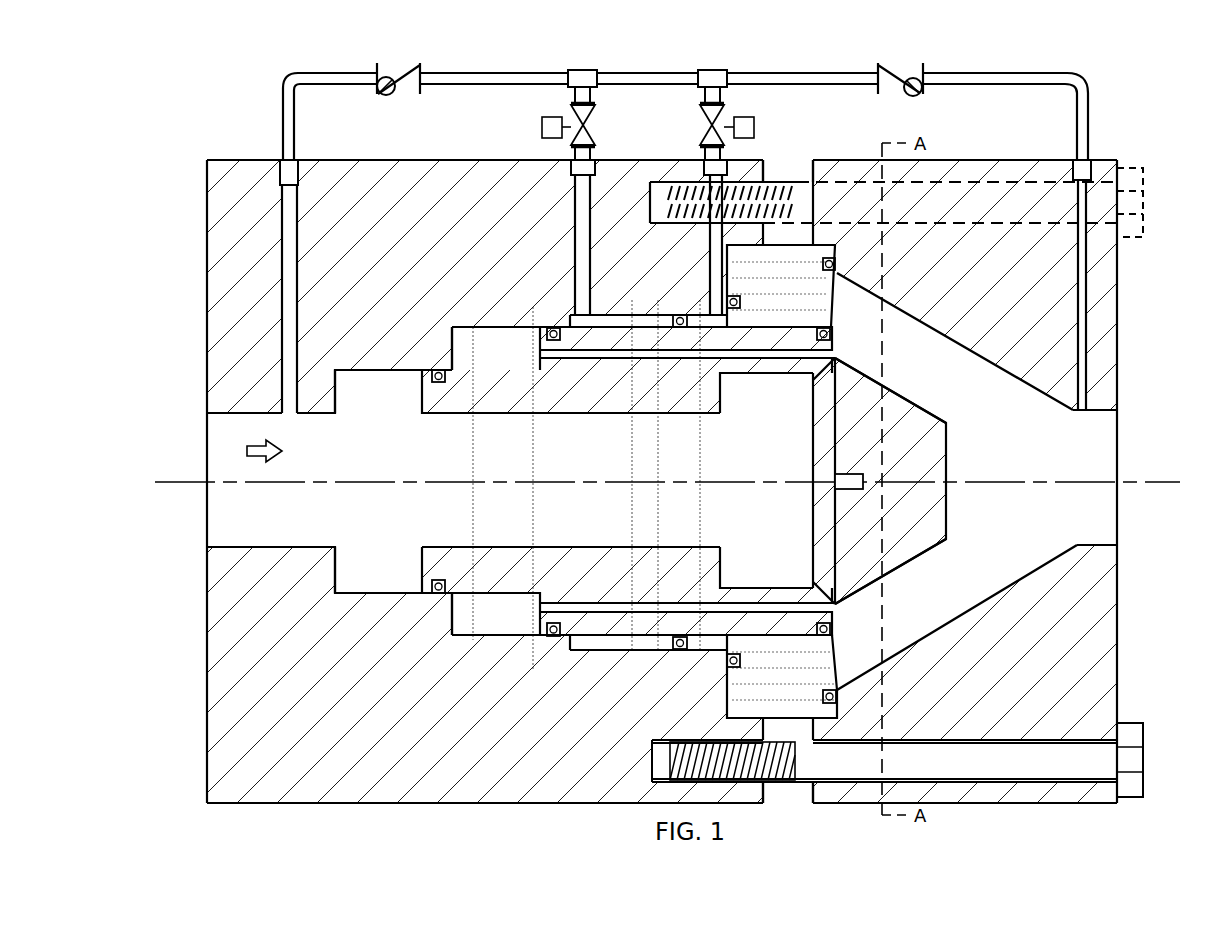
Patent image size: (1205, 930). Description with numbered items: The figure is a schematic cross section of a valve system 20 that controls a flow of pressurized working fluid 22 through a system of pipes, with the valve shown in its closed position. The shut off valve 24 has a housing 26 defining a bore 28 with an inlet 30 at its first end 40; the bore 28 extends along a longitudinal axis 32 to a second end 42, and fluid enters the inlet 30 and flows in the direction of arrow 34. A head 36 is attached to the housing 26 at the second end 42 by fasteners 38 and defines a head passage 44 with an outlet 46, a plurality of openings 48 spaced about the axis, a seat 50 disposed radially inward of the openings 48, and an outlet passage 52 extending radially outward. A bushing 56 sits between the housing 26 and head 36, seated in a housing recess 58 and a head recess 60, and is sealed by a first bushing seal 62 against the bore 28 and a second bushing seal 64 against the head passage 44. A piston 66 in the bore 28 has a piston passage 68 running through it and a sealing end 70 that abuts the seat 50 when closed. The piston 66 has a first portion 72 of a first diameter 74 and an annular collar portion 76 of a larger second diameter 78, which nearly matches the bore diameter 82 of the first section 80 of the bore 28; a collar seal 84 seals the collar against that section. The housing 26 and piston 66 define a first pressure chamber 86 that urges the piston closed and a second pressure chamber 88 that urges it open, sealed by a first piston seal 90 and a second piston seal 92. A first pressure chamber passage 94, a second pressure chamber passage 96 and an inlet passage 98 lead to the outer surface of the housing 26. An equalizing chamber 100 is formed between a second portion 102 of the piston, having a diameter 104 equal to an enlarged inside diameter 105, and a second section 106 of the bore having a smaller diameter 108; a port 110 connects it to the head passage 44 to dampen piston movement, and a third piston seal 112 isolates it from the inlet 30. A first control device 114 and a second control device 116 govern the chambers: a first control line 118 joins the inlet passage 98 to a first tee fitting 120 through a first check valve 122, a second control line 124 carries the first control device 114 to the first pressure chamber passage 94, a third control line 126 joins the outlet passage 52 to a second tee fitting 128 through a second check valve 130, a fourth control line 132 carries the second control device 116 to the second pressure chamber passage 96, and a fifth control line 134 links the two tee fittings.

The valve system 20 is at (1035, 40).
The working fluid 22 is at (281, 502).
The shut off valve 24 is at (250, 160).
The housing 26 is at (205, 240).
The bore 28 is at (240, 410).
The inlet 30 is at (232, 545).
The longitudinal axis 32 is at (205, 478).
The arrow 34 is at (262, 452).
The head 36 is at (985, 160).
The fasteners 38 is at (1128, 723).
The first end 40 is at (205, 590).
The second end 42 is at (780, 800).
The head passage 44 is at (905, 320).
The outlet 46 is at (1118, 415).
The openings 48 is at (836, 365).
The seat 50 is at (812, 430).
The outlet passage 52 is at (1122, 290).
The bushing 56 is at (790, 225).
The housing recess 58 is at (772, 220).
The head recess 60 is at (820, 235).
The first bushing seal 62 is at (722, 285).
The second bushing seal 64 is at (836, 264).
The piston 66 is at (542, 418).
The piston passage 68 is at (545, 543).
The sealing end 70 is at (850, 372).
The first portion 72 is at (620, 660).
The first diameter 74 is at (645, 495).
The annular collar portion 76 is at (645, 265).
The second diameter 78 is at (705, 440).
The first section 80 is at (718, 670).
The bore diameter 82 is at (622, 440).
The collar seal 84 is at (665, 285).
The first pressure chamber 86 is at (588, 300).
The second pressure chamber 88 is at (745, 380).
The first piston seal 90 is at (540, 300).
The second piston seal 92 is at (820, 310).
The first pressure chamber passage 94 is at (578, 200).
The second pressure chamber passage 96 is at (705, 175).
The inlet passage 98 is at (305, 215).
The equalizing chamber 100 is at (496, 481).
The second portion 102 is at (452, 320).
The diameter 104 is at (462, 455).
The enlarged inside diameter 105 is at (745, 500).
The second section 106 is at (540, 320).
The diameter 108 is at (528, 445).
The port 110 is at (835, 336).
The third piston seal 112 is at (432, 368).
The first control device 114 is at (572, 112).
The second control device 116 is at (728, 115).
The first control line 118 is at (308, 88).
The first tee fitting 120 is at (598, 70).
The first check valve 122 is at (402, 70).
The second control line 124 is at (597, 152).
The third control line 126 is at (1082, 73).
The second tee fitting 128 is at (735, 70).
The second check valve 130 is at (905, 72).
The fourth control line 132 is at (705, 95).
The fifth control line 134 is at (648, 73).